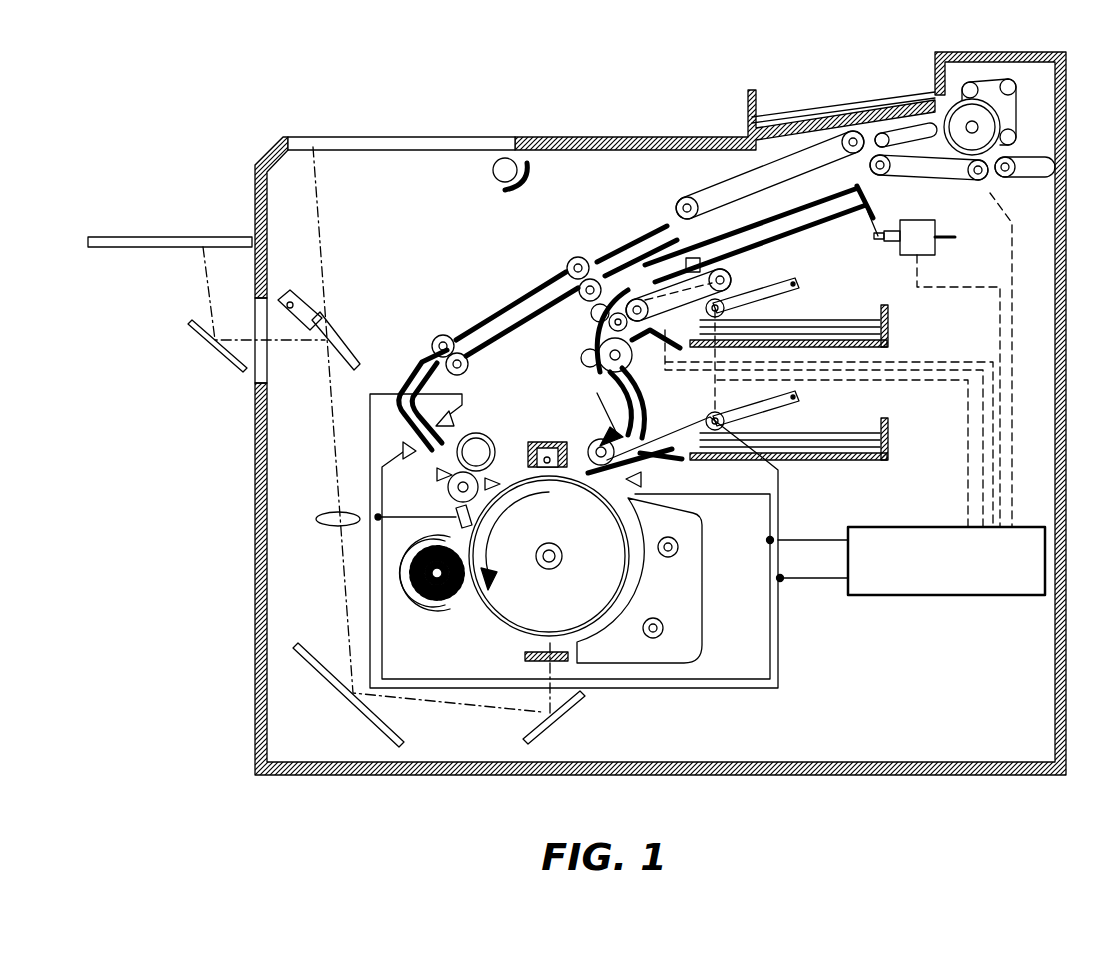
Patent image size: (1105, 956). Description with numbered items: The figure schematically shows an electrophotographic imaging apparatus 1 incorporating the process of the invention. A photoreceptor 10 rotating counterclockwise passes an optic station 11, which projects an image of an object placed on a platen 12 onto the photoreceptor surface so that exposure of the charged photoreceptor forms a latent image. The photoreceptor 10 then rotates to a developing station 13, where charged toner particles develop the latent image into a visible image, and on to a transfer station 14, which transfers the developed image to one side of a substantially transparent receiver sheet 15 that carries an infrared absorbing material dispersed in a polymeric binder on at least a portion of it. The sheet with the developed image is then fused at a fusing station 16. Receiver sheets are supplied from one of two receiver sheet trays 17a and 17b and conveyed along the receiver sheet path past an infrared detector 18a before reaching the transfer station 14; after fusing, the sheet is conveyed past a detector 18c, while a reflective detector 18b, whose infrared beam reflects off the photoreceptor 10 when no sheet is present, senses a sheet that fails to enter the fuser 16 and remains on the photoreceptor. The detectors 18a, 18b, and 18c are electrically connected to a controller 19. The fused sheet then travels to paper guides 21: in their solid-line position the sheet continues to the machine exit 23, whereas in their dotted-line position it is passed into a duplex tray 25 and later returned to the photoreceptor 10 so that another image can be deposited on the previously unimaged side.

The electrophotographic imaging apparatus 1 is at (462, 112).
The photoreceptor 10 is at (490, 612).
The optic station 11 is at (528, 648).
The platen 12 is at (137, 237).
The developing station 13 is at (693, 630).
The transfer station 14 is at (546, 442).
The receiver sheet 15 is at (672, 435).
The fusing station 16 is at (482, 436).
The receiver sheet tray 17a is at (890, 325).
The receiver sheet tray 17b is at (890, 450).
The infrared detector 18a is at (641, 479).
The infrared detector 18b is at (456, 516).
The infrared detector 18c is at (400, 446).
The controller 19 is at (907, 538).
The paper guides 21 is at (640, 242).
The machine exit 23 is at (912, 93).
The duplex tray 25 is at (865, 188).